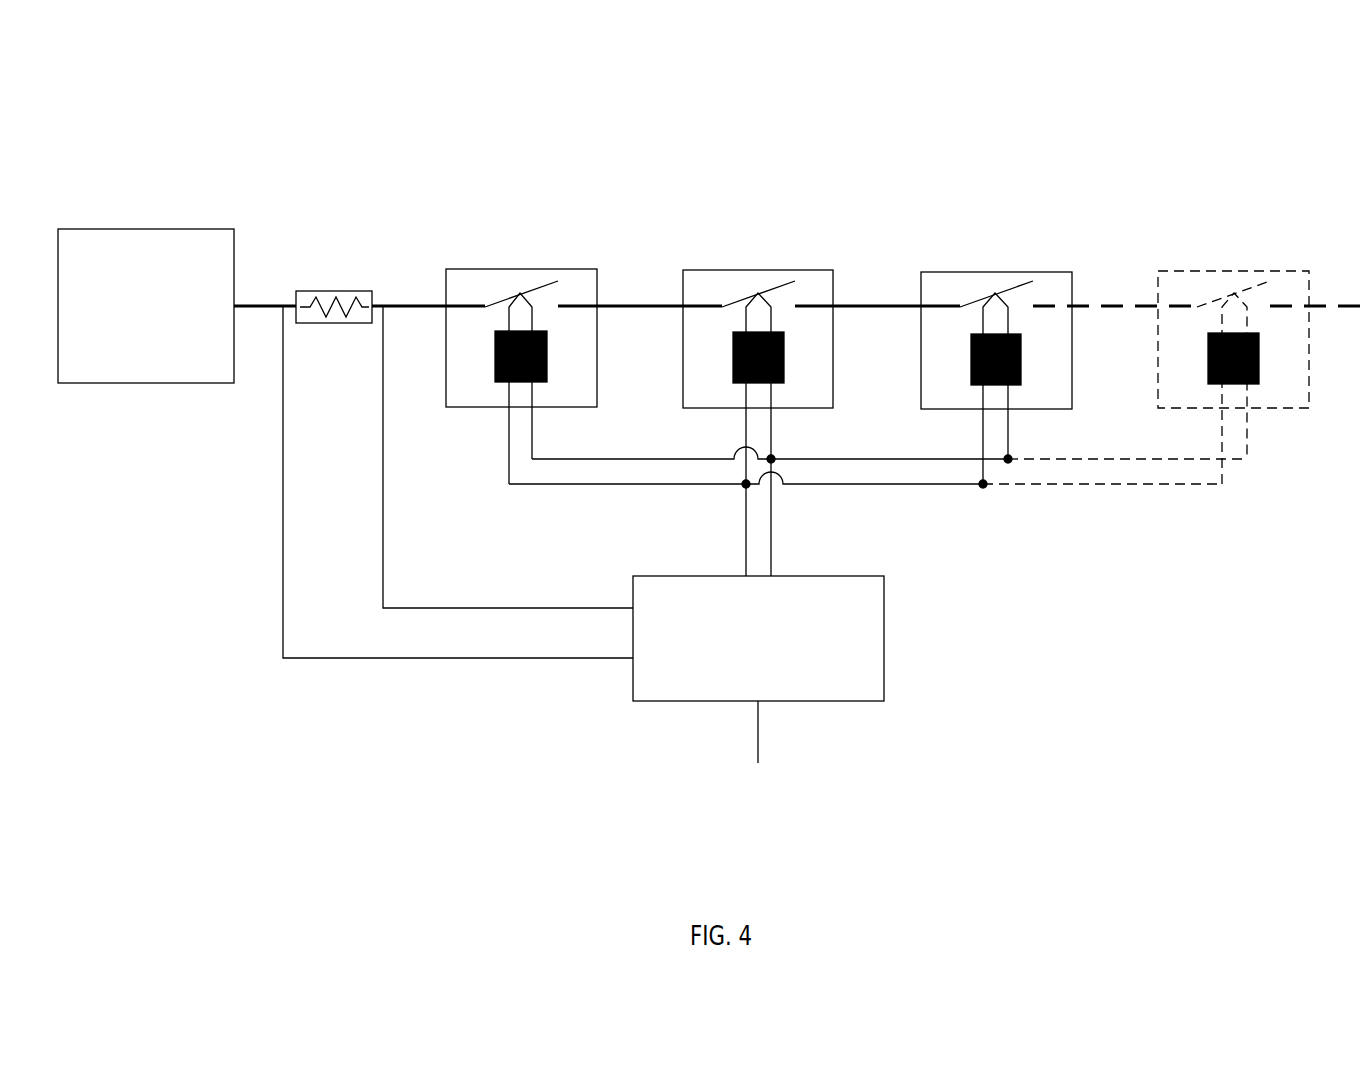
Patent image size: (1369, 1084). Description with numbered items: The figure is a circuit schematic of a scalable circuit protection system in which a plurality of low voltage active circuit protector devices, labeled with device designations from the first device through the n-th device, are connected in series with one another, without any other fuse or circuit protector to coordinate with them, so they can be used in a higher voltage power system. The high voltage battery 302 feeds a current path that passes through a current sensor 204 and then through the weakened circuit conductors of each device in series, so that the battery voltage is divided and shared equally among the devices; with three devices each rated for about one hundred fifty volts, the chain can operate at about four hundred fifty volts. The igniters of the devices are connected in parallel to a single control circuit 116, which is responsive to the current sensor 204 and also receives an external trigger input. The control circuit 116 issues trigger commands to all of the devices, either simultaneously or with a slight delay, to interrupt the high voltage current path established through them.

The battery 302 is at (150, 229).
The current sensor 204 is at (335, 325).
The control circuit 116 is at (888, 598).